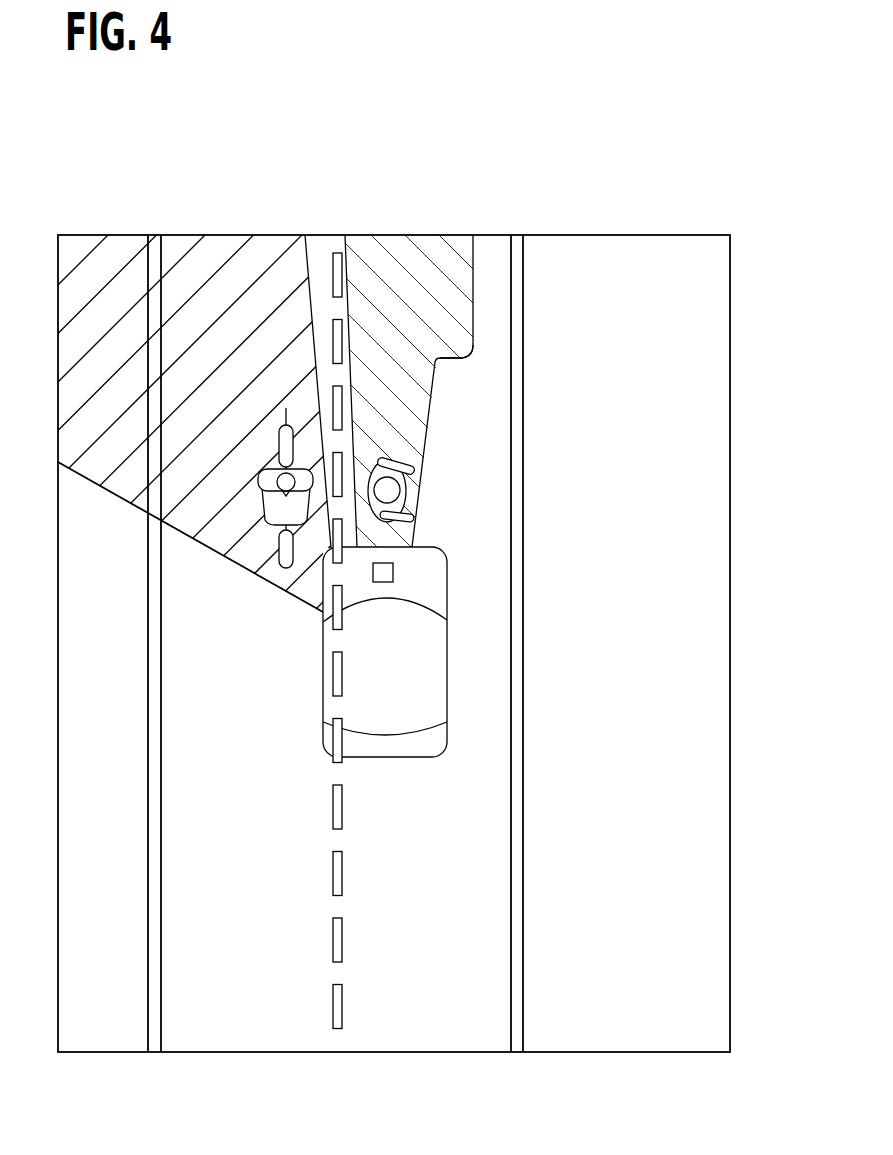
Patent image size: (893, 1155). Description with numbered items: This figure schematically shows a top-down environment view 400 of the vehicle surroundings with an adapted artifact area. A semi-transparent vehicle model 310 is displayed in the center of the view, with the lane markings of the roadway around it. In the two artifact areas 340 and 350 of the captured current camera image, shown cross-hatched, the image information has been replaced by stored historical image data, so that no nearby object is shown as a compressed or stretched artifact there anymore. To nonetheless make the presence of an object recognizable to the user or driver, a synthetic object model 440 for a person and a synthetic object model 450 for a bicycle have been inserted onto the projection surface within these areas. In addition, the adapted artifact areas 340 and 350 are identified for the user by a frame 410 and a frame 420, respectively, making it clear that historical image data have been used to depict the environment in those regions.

The road scene / roadway 400 is at (596, 233).
The artifact area 350 is at (205, 255).
The artifact area 340 is at (402, 255).
The vehicle model 310 is at (410, 692).
The frame 410 is at (473, 355).
The frame 420 is at (123, 500).
The synthetic object model for a person 440 is at (400, 488).
The synthetic object model for a bicycle 450 is at (280, 534).